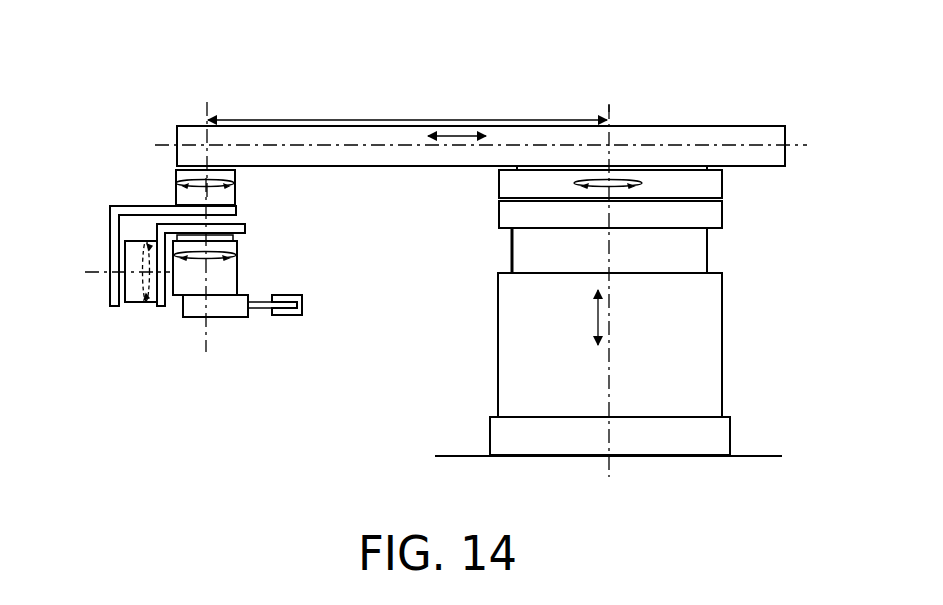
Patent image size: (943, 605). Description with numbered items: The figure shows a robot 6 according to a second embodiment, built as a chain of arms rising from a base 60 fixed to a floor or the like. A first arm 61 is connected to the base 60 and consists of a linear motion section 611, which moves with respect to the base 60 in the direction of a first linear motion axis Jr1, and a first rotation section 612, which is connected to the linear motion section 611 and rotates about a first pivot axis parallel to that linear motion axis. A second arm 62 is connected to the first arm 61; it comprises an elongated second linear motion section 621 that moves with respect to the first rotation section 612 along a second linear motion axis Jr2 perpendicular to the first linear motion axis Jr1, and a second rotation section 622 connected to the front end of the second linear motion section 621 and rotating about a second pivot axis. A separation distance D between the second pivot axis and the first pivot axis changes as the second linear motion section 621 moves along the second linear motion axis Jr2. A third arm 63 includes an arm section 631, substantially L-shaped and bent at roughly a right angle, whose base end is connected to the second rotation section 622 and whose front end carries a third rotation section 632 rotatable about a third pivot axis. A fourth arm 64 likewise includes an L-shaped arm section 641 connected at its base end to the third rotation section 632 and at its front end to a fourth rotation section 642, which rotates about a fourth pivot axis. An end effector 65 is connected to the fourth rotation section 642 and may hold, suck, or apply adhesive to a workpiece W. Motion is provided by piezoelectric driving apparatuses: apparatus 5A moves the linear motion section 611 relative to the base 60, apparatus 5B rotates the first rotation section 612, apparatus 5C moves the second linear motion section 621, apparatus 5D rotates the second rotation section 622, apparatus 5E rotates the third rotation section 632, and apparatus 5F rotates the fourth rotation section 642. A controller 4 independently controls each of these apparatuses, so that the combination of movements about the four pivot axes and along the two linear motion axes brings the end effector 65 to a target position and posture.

The robot 6 is at (135, 20).
The controller 4 is at (538, 345).
The piezoelectric driving apparatus 5A is at (538, 288).
The piezoelectric driving apparatus 5B is at (680, 216).
The piezoelectric driving apparatus 5C is at (666, 177).
The piezoelectric driving apparatus 5D is at (197, 155).
The piezoelectric driving apparatus 5E is at (140, 303).
The piezoelectric driving apparatus 5F is at (190, 277).
The base 60 is at (698, 435).
The first arm 61 is at (398, 170).
The linear motion section 611 is at (533, 214).
The first rotation section 612 is at (533, 181).
The second arm 62 is at (358, 80).
The second linear motion section 621 is at (336, 128).
The second rotation section 622 is at (238, 183).
The third arm 63 is at (158, 172).
The arm section 631 is at (117, 240).
The third rotation section 632 is at (138, 243).
The fourth arm 64 is at (318, 213).
The arm section 641 is at (224, 230).
The fourth rotation section 642 is at (222, 268).
The end effector 65 is at (230, 306).
The workpiece W is at (285, 315).
The separation distance D is at (407, 109).
The first linear motion axis Jr1 is at (606, 303).
The second linear motion axis Jr2 is at (496, 146).